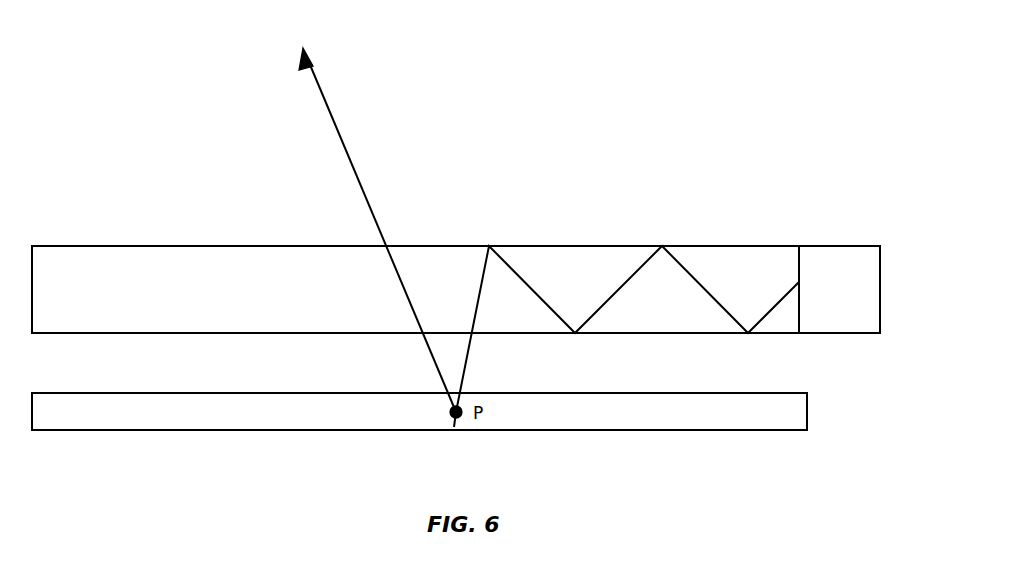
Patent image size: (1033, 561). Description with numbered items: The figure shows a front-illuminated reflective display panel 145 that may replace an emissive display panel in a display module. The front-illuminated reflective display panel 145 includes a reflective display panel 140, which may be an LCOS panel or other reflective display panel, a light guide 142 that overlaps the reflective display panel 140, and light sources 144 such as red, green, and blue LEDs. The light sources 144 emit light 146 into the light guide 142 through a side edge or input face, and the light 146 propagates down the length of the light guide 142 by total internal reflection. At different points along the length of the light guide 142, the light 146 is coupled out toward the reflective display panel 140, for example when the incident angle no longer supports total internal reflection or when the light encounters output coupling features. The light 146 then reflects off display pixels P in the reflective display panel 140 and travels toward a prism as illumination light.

The reflective display panel 140 is at (738, 432).
The light guide 142 is at (788, 335).
The light sources 144 is at (881, 291).
The front-illuminated reflective display panel 145 is at (619, 91).
The light 146 is at (345, 143).